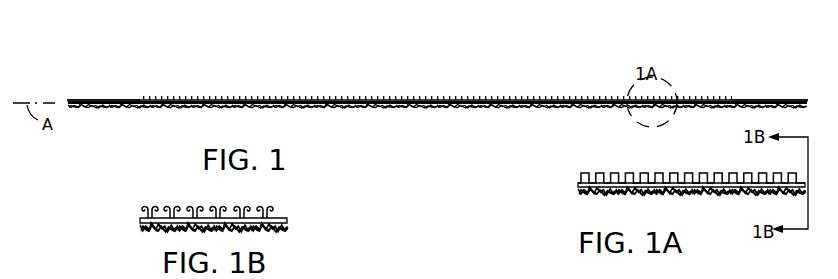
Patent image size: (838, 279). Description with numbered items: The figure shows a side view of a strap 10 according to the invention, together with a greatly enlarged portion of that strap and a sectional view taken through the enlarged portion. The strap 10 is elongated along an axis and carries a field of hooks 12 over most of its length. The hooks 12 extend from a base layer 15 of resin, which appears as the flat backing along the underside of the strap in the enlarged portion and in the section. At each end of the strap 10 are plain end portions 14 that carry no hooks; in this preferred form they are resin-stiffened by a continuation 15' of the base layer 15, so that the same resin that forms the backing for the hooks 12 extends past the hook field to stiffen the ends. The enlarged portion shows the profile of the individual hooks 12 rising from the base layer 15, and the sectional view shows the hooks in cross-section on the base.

In FIG. 1, the strap 10 is at (272, 82).
In FIG. 1, the hooks 12 is at (511, 99).
In FIG. 1A, the hooks 12 is at (717, 177).
In FIG. 1, the plain end portions 14 is at (138, 56).
In FIG. 1A, the base layer 15 is at (668, 174).
In FIG. 1, the continuation of the base layer 15' is at (437, 83).